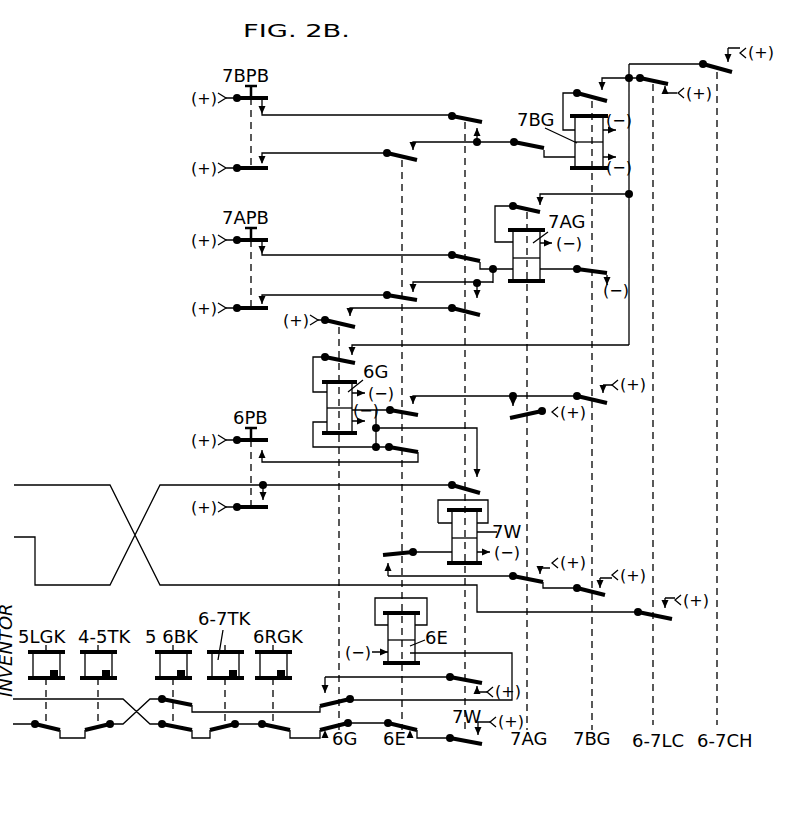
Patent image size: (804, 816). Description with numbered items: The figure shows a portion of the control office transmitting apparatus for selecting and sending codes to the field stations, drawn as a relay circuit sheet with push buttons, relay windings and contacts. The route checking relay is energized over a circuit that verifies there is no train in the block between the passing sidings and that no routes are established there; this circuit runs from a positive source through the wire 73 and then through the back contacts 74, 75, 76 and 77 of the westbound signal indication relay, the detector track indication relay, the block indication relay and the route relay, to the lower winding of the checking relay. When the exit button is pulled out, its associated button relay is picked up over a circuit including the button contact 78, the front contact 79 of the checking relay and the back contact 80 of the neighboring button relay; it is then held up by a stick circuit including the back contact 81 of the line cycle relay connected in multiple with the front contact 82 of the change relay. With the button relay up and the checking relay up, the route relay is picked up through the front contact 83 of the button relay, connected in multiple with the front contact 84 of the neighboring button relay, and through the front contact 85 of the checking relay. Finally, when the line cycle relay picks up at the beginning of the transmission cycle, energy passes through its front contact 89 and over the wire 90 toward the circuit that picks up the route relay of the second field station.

The wire 73 is at (37, 715).
The back contact of relay 5LGK 74 is at (70, 721).
The back contact of relay 4-5TK 75 is at (105, 731).
The back contact of relay 5-6BK 76 is at (182, 701).
The back contact of relay 6G 77 is at (340, 700).
The contact of button 7BPB 78 is at (243, 158).
The front contact of relay 6E 79 is at (396, 165).
The back contact of relay 7AG 80 is at (524, 152).
The back contact of relay 6-7LC 81 is at (663, 83).
The front contact of relay 6-7CH 82 is at (724, 78).
The front contact of relay 7BG 83 is at (599, 409).
The front contact of relay 7AG 84 is at (534, 425).
The front contact of relay 6E 85 is at (418, 415).
The front contact of relay 6-7LC 89 is at (657, 624).
The wire 90 is at (31, 485).